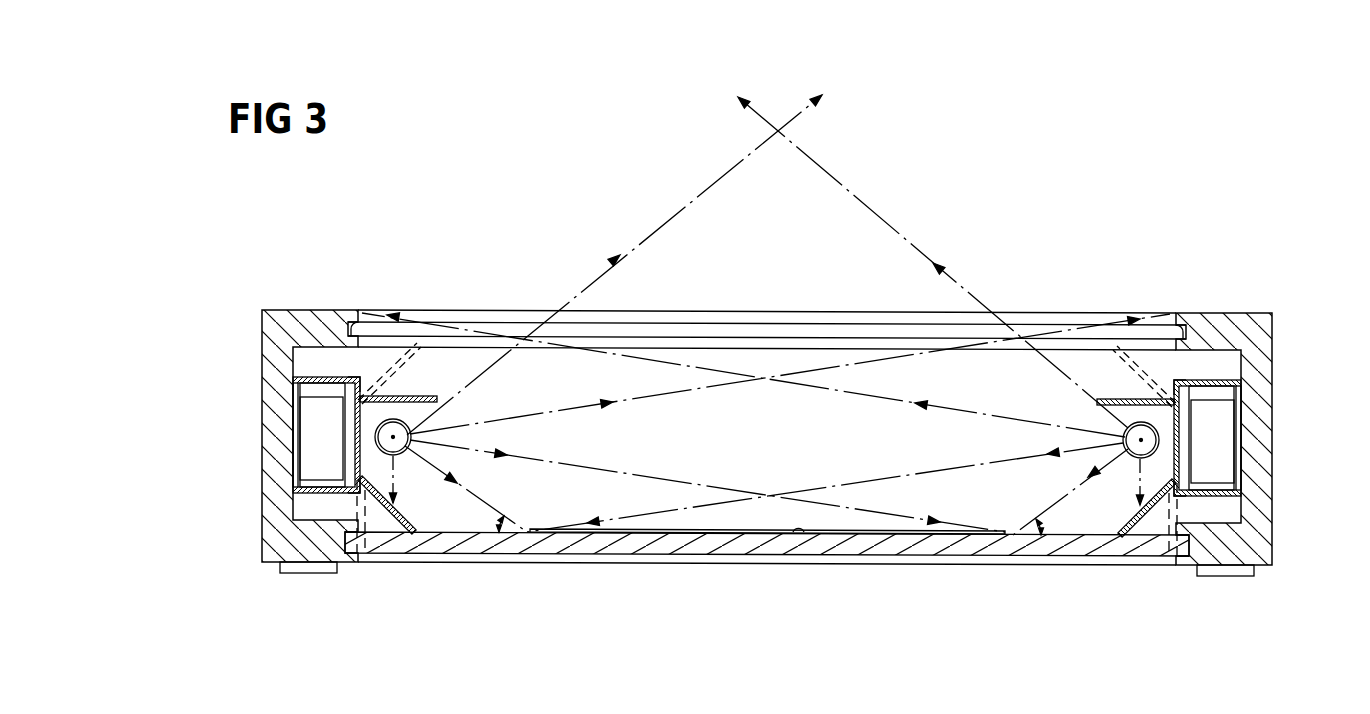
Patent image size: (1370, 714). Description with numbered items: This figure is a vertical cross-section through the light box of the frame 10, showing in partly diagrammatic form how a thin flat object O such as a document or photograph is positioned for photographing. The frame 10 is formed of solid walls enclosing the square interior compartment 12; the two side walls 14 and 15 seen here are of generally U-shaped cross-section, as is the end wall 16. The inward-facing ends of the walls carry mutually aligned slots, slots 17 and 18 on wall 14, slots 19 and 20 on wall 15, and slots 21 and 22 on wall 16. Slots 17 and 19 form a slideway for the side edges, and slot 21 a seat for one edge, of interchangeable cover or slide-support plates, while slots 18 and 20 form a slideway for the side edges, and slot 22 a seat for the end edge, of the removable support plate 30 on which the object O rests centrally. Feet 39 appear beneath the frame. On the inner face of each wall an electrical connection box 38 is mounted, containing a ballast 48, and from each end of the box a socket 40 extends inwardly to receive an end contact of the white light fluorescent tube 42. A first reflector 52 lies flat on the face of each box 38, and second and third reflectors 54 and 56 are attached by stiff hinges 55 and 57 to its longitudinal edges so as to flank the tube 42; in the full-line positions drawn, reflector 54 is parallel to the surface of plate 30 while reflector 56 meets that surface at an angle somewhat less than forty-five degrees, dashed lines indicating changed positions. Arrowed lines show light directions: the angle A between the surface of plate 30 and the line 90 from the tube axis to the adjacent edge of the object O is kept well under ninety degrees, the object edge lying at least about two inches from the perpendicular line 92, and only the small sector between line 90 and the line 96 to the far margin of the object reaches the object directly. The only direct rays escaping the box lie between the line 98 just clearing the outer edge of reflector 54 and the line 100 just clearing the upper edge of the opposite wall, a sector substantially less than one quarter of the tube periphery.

The frame 10 is at (283, 309).
The interior compartment 12 is at (513, 395).
The side wall 14 is at (1275, 350).
The side wall 15 is at (262, 338).
The end wall 16 is at (541, 386).
The slot 17 is at (1172, 325).
The slot 18 is at (1170, 556).
The slot 19 is at (352, 320).
The slot 20 is at (367, 543).
The slot 21 is at (505, 322).
The slot 22 is at (528, 553).
The support plate 30 is at (677, 553).
The electrical connection box 38 is at (320, 376).
The mounting foot 39 is at (298, 573).
The socket 40 is at (368, 428).
The fluorescent light tube 42 is at (411, 430).
The ballast 48 is at (318, 447).
The first reflector 52 is at (395, 446).
The second reflector 54 is at (395, 370).
The hinge 55 is at (364, 404).
The third reflector 56 is at (383, 522).
The hinge 57 is at (360, 478).
The line 90 is at (483, 498).
The line 92 is at (412, 498).
The line 96 is at (640, 473).
The line 98 is at (690, 200).
The line 100 is at (660, 362).
The angle A is at (499, 530).
The object O is at (804, 532).